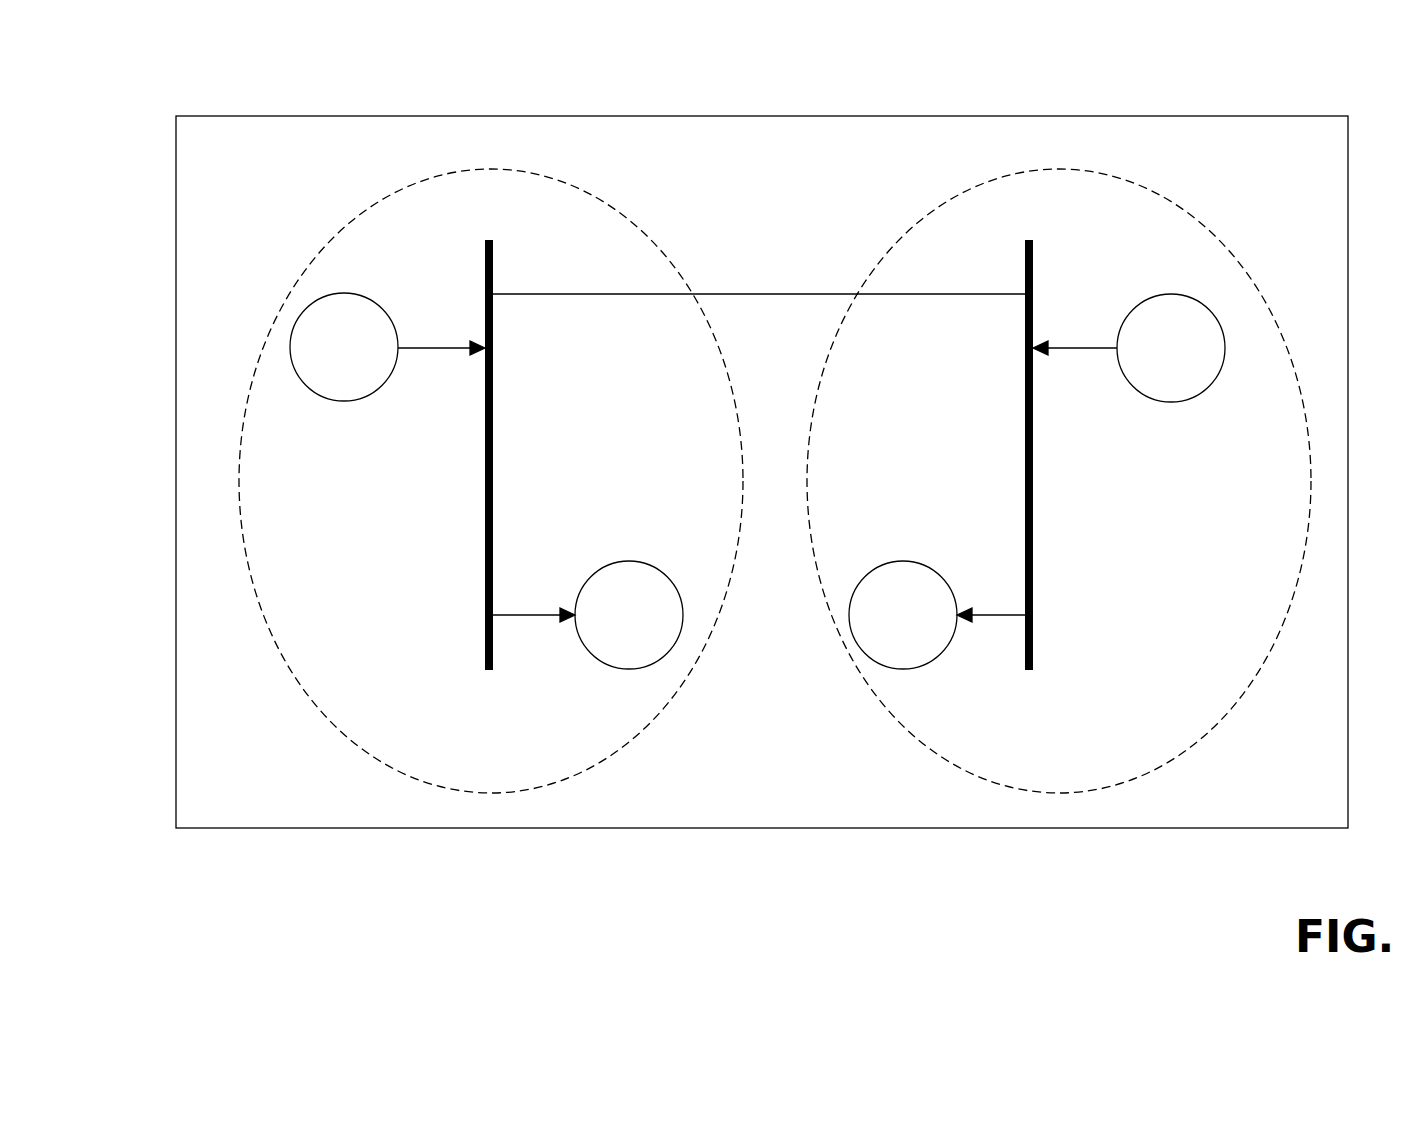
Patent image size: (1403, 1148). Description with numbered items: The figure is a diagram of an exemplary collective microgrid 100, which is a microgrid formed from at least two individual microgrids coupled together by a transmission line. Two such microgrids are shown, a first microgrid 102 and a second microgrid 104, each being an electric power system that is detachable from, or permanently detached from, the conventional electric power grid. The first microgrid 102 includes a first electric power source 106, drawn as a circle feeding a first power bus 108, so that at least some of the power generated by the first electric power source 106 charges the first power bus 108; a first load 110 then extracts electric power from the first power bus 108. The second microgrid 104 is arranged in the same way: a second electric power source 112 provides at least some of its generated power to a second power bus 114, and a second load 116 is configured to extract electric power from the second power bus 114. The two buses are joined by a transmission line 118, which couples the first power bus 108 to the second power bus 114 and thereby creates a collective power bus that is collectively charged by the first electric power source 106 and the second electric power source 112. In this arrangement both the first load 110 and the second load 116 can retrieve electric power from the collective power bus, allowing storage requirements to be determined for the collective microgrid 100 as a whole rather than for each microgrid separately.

The collective microgrid 100 is at (530, 98).
The first microgrid 102 is at (332, 237).
The second microgrid 104 is at (906, 233).
The first electric power source 106 is at (362, 402).
The first power bus 108 is at (497, 398).
The first load 110 is at (652, 566).
The second electric power source 112 is at (1195, 402).
The second power bus 114 is at (1026, 523).
The second load 116 is at (920, 562).
The transmission line 118 is at (818, 292).